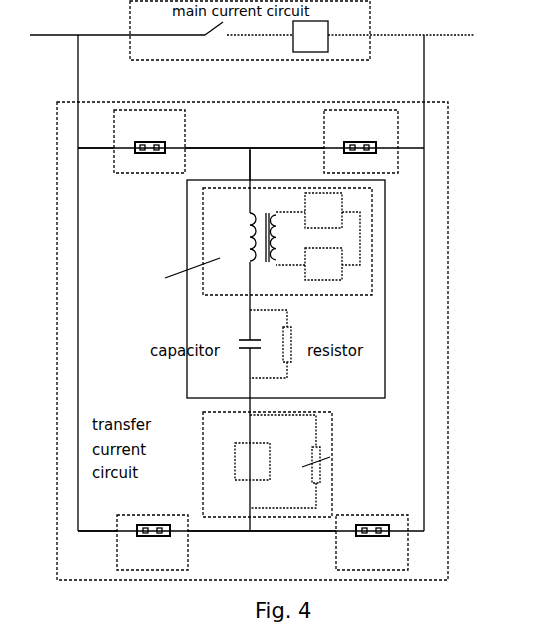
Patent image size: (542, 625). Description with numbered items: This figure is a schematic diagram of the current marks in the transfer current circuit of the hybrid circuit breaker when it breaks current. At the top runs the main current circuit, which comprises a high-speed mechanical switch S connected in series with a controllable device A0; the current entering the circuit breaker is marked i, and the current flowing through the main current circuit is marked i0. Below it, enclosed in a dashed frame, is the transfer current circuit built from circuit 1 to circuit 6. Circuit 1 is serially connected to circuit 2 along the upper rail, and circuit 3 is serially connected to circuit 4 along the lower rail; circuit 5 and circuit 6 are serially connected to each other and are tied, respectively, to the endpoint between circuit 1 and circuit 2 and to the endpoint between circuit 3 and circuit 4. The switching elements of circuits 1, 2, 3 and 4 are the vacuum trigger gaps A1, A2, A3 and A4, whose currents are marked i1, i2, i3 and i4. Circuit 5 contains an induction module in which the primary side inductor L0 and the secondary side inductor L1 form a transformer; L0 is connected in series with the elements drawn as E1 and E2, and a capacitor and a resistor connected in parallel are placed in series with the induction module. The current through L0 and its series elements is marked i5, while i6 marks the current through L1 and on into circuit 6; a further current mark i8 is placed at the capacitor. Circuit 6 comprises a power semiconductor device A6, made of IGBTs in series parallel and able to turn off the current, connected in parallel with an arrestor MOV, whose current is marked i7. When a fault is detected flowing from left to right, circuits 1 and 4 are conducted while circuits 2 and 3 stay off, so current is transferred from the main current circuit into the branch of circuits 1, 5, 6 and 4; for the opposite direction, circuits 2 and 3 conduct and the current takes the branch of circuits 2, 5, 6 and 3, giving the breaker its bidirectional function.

The circuit 1 is at (149, 141).
The circuit 2 is at (361, 141).
The circuit 3 is at (152, 542).
The circuit 4 is at (372, 542).
The circuit 5 is at (315, 236).
The circuit 6 is at (281, 461).
The high-speed mechanical switch S is at (249, 35).
The controllable device A0 is at (383, 36).
The vacuum trigger gap A1 is at (150, 157).
The vacuum trigger gap A2 is at (360, 157).
The vacuum trigger gap A3 is at (153, 540).
The vacuum trigger gap A4 is at (372, 540).
The power semiconductor device A6 is at (252, 461).
The secondary side inductor L1 is at (241, 237).
The primary side inductor L0 is at (285, 237).
The electrode E1 is at (323, 264).
The electrode E2 is at (323, 210).
The arrestor MOV is at (325, 466).
The current flowing through circuit breaker i is at (54, 28).
The current flowing through main current circuit i0 is at (141, 28).
The current flowing through circuit 1 i1 is at (96, 139).
The current flowing through circuit 2 i2 is at (254, 139).
The current flowing through circuit 3 i3 is at (97, 540).
The current flowing through circuit 4 i4 is at (262, 540).
The current flowing through B1, B2 and L0 i5 is at (347, 243).
The current flowing through L1 and circuit 6 i6 is at (240, 165).
The current flowing through MOV i7 is at (301, 499).
The current i8 is at (246, 336).